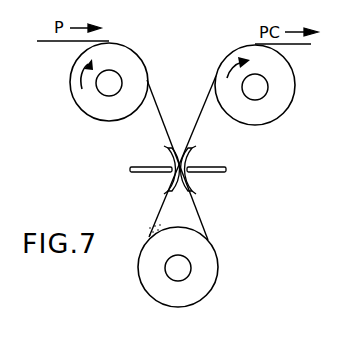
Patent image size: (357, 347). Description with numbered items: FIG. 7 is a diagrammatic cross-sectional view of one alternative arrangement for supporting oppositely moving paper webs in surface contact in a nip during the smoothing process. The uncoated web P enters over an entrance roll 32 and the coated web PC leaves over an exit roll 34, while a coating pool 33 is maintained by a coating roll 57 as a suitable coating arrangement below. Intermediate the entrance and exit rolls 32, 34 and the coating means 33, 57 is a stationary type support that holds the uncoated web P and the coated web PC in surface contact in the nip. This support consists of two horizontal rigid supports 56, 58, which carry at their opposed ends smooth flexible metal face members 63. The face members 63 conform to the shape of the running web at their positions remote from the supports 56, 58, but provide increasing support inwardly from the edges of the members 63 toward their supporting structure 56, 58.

The entrance roll 32 is at (97, 104).
The coating pool 33 is at (152, 221).
The exit roll 34 is at (271, 99).
The horizontal rigid support 56 is at (141, 172).
The coating roll 57 is at (206, 271).
The horizontal rigid support 58 is at (212, 174).
The flexible metal face member 63 is at (171, 151).